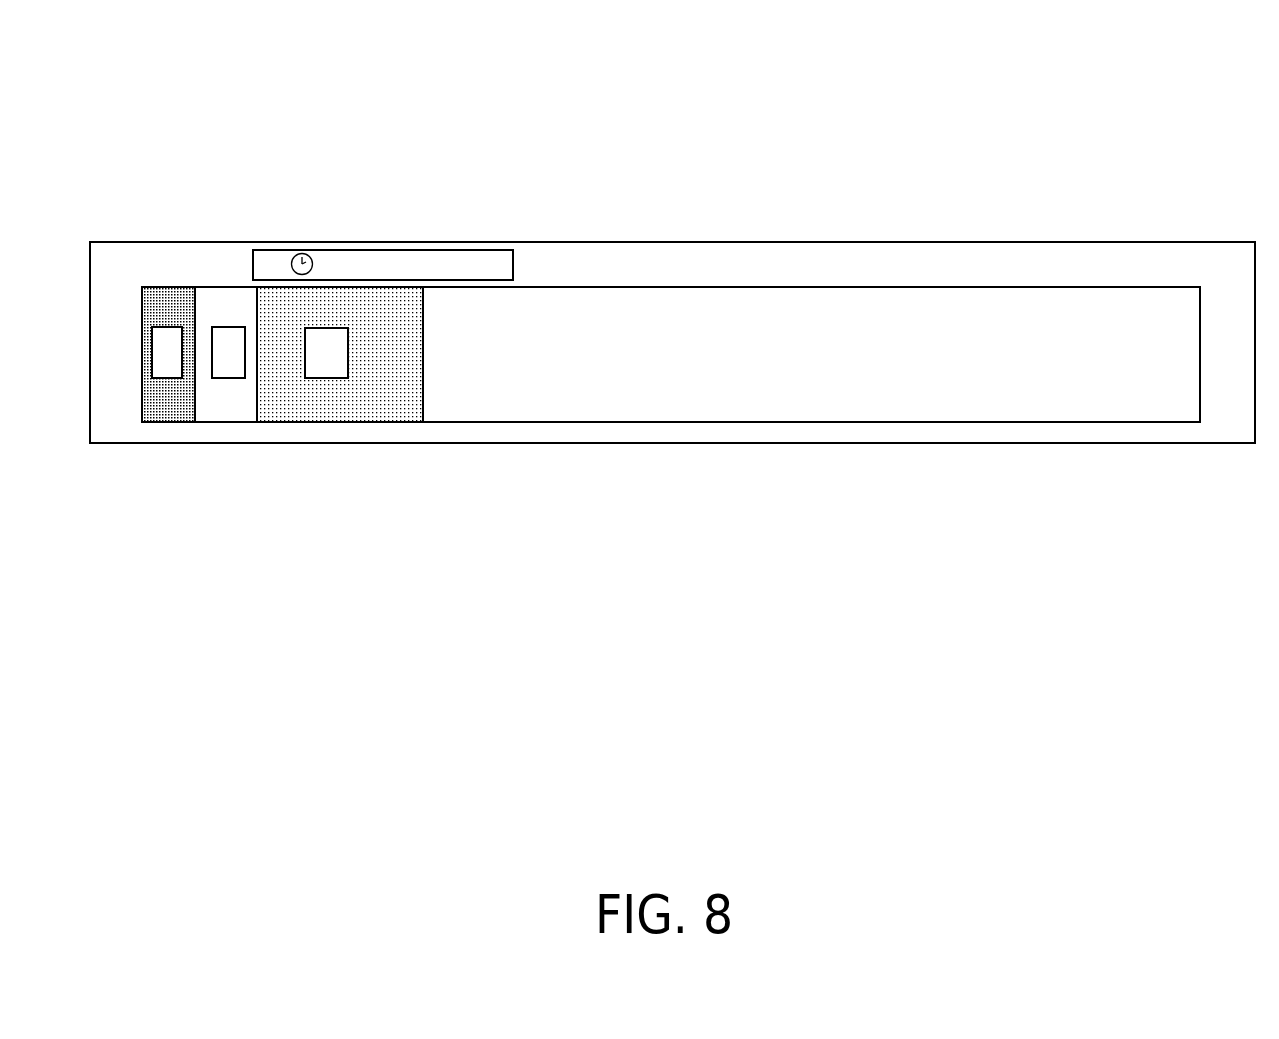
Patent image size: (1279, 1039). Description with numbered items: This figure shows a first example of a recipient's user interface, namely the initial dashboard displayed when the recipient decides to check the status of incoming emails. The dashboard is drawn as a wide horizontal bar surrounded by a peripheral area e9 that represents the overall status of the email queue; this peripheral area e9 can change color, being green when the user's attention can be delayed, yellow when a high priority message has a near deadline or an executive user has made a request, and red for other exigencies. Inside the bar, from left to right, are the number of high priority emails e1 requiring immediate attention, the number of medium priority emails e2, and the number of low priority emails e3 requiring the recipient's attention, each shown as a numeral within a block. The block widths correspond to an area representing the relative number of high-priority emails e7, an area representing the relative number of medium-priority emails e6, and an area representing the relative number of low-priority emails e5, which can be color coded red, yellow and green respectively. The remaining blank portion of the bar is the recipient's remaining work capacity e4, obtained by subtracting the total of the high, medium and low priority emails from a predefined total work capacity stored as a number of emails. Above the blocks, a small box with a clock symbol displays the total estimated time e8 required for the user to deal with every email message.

The number of high priority emails e1 is at (165, 422).
The number of medium priority emails e2 is at (228, 382).
The number of low priority emails e3 is at (327, 382).
The recipient's remaining work capacity e4 is at (705, 322).
The area representing the relative number of low-priority emails e5 is at (423, 353).
The area representing the relative number of medium-priority emails e6 is at (223, 283).
The area representing the relative number of high-priority emails e7 is at (170, 283).
The total estimated time e8 is at (430, 242).
The peripheral area e9 is at (838, 265).